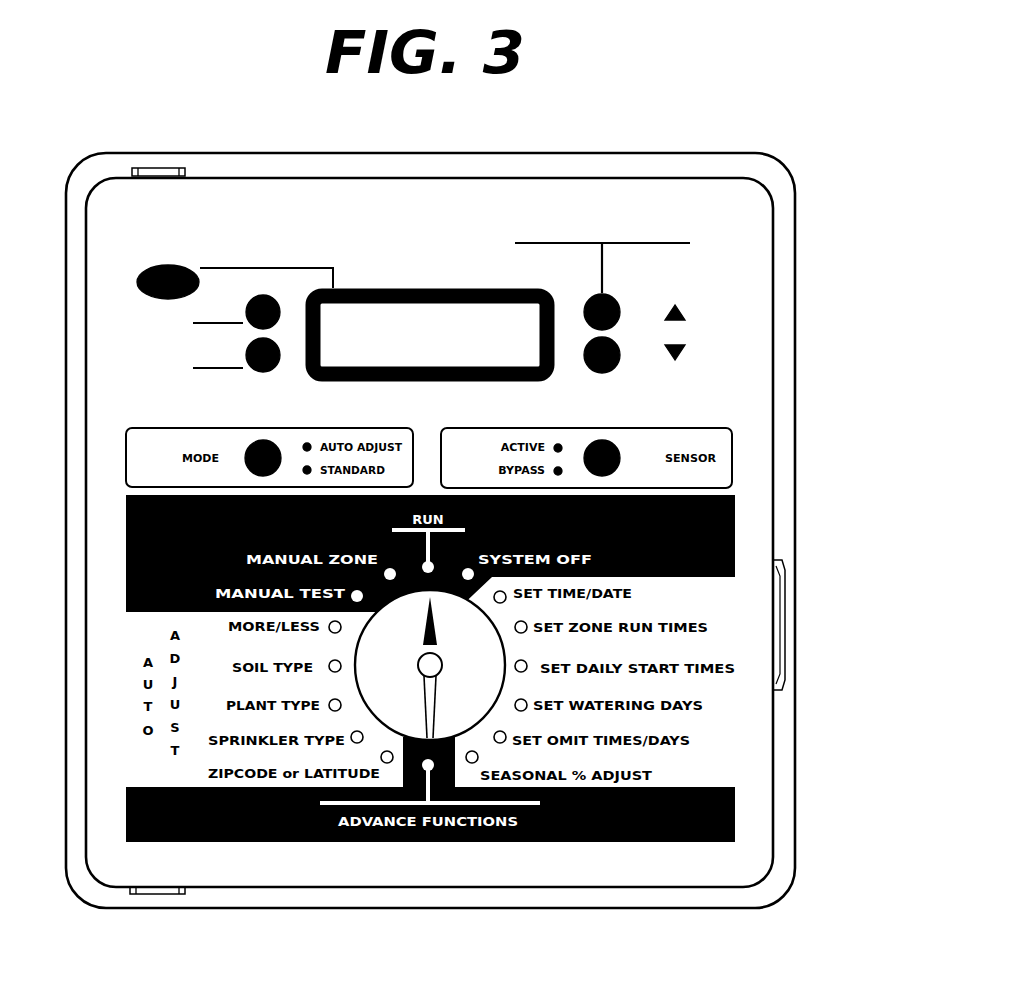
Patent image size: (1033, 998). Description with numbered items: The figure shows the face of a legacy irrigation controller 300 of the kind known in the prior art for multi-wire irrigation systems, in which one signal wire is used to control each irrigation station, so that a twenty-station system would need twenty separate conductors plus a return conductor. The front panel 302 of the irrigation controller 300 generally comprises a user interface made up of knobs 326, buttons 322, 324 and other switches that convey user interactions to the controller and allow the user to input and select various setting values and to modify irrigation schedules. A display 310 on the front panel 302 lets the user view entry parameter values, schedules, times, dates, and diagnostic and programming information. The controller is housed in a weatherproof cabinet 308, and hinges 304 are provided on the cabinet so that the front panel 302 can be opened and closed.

The irrigation controller 300 is at (733, 110).
The front panel 302 is at (748, 380).
The hinges 304 is at (161, 167).
The weatherproof cabinet 308 is at (788, 482).
The display 310 is at (425, 314).
The buttons 322 is at (278, 369).
The buttons 324 is at (620, 310).
The knobs 326 is at (442, 665).